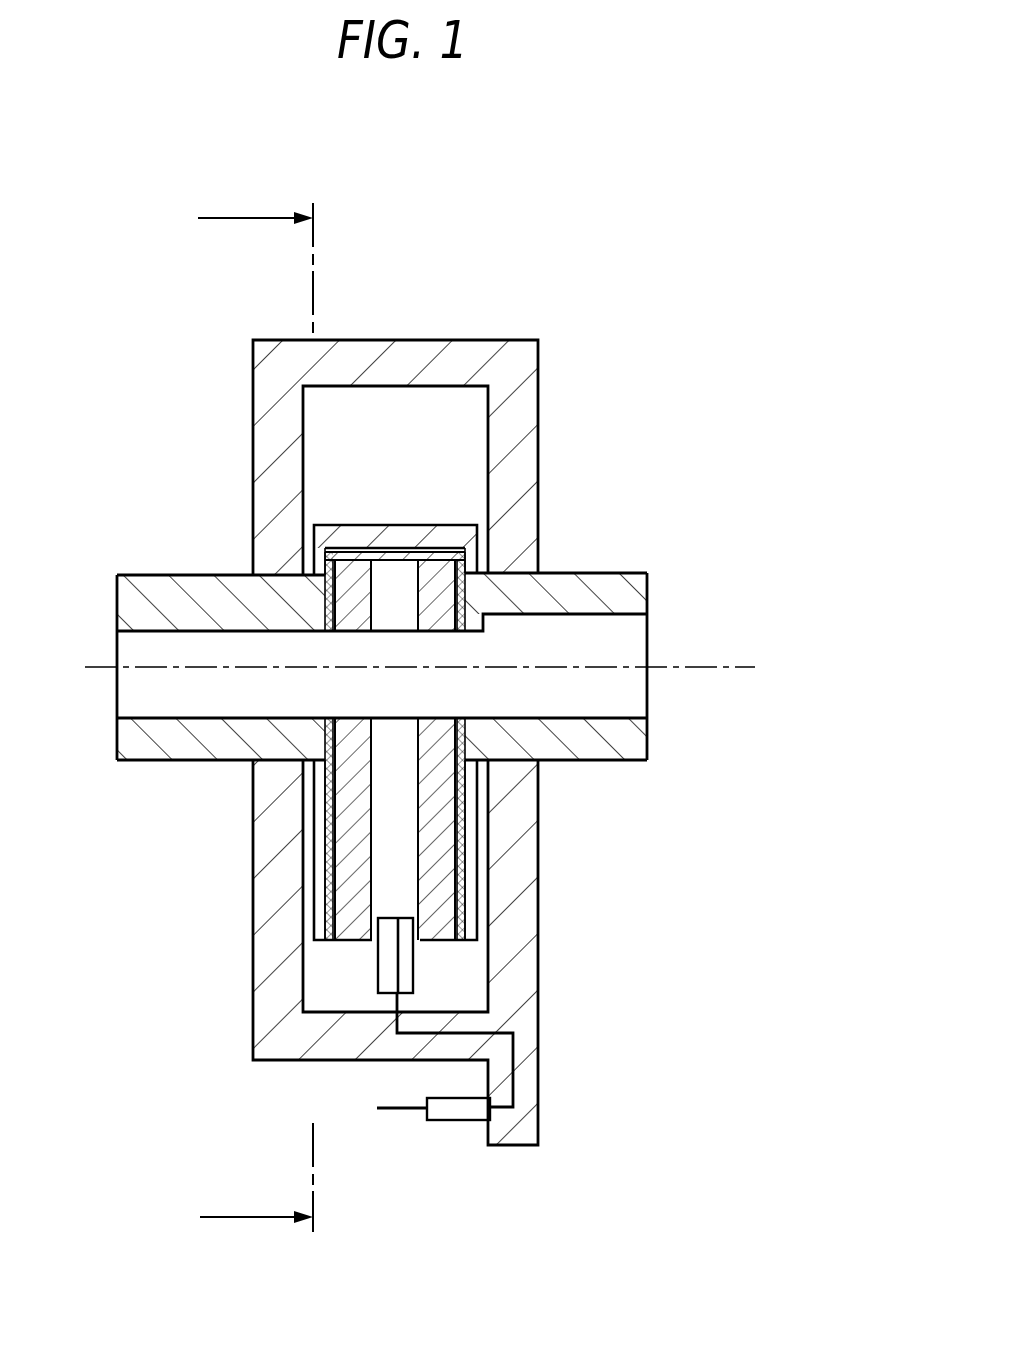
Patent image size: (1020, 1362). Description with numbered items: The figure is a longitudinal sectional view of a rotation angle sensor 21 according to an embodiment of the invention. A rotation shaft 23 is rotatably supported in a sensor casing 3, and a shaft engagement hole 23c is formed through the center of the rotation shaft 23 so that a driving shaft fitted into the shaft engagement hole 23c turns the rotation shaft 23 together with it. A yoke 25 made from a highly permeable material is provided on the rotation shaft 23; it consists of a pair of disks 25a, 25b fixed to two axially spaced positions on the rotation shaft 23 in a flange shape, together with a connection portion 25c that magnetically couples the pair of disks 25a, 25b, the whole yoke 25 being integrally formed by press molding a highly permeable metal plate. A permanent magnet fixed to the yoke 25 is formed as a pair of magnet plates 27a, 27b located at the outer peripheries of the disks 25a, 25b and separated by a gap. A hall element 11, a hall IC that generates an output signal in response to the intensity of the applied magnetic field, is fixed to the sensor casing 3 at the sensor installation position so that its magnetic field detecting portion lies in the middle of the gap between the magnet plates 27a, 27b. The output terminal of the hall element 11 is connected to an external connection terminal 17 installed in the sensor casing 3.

The rotation angle sensor 21 is at (438, 723).
The sensor casing 3 is at (540, 457).
The rotation shaft 23 is at (454, 604).
The shaft engagement hole 23c is at (594, 615).
The yoke 25 is at (399, 525).
The disk 25a is at (332, 857).
The disk 25b is at (458, 852).
The connection portion 25c is at (422, 552).
The magnet plate 27a is at (352, 940).
The magnet plate 27b is at (440, 938).
The hall element 11 is at (378, 973).
The external connection terminal 17 is at (445, 1121).